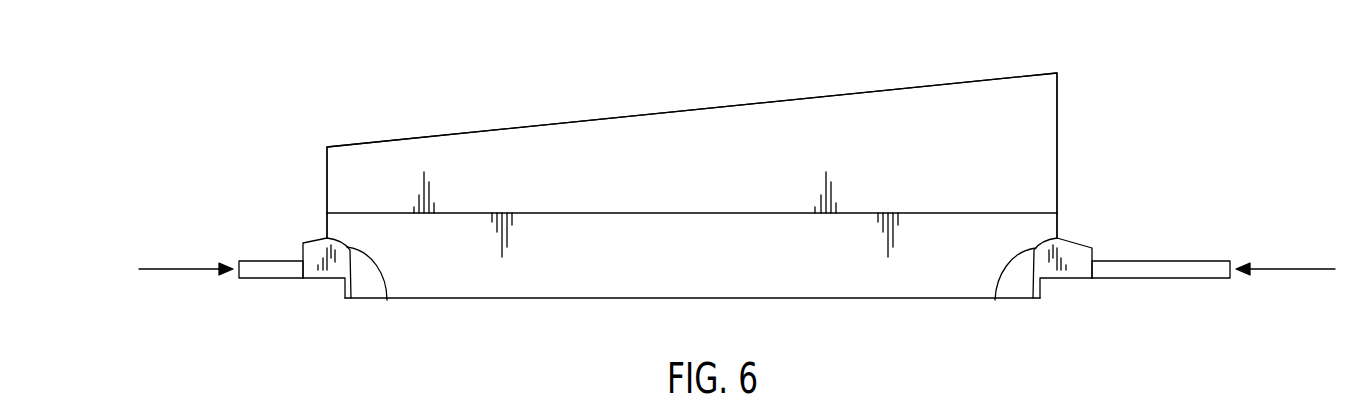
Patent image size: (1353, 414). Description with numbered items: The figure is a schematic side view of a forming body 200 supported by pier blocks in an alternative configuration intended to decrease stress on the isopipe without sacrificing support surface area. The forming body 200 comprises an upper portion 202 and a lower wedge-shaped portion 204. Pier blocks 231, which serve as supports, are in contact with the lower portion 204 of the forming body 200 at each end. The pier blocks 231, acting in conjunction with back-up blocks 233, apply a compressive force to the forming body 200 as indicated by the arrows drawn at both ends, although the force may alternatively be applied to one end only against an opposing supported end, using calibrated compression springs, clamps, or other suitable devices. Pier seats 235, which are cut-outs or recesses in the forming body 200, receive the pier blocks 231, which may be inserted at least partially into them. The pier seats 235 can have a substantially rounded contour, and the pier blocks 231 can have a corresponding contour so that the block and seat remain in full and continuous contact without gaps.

The forming body 200 is at (257, 101).
The upper portion 202 is at (716, 180).
The lower portion 204 is at (716, 275).
The pier blocks 231 is at (318, 240).
The back-up blocks 233 is at (267, 260).
The pier seats 235 is at (387, 300).